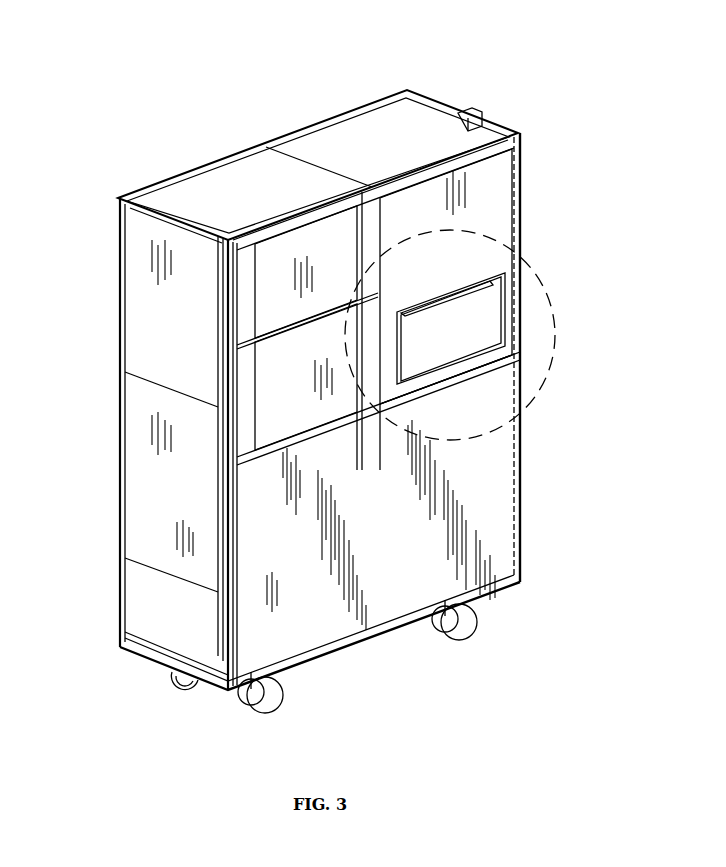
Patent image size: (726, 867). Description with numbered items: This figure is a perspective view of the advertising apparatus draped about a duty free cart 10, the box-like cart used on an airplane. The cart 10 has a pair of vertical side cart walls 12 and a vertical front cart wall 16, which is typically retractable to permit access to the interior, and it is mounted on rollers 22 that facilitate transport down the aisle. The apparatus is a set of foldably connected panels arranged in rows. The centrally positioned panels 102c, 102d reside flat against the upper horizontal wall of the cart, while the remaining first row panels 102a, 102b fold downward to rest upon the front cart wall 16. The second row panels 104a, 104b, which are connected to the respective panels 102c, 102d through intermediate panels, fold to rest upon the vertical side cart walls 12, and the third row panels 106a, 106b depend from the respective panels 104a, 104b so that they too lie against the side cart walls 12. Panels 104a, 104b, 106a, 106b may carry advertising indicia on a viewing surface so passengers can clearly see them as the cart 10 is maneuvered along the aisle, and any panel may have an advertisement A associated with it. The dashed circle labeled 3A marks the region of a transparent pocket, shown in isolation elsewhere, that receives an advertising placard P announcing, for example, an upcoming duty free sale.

The cart 10 is at (530, 480).
The side vertical panels or cart walls 12 is at (497, 522).
The vertical front cart wall 16 is at (168, 622).
The rollers 22 is at (478, 627).
The panel 102a is at (188, 493).
The panel 102b is at (188, 330).
The panel 102c is at (292, 193).
The panel 102d is at (406, 158).
The panel 104a is at (243, 270).
The panel 104b is at (485, 197).
The panel 106a is at (243, 437).
The panel 106b is at (490, 362).
The advertising placard P is at (497, 304).
The advertisement A is at (330, 230).
The isolated view of FIG. 3A is at (496, 331).